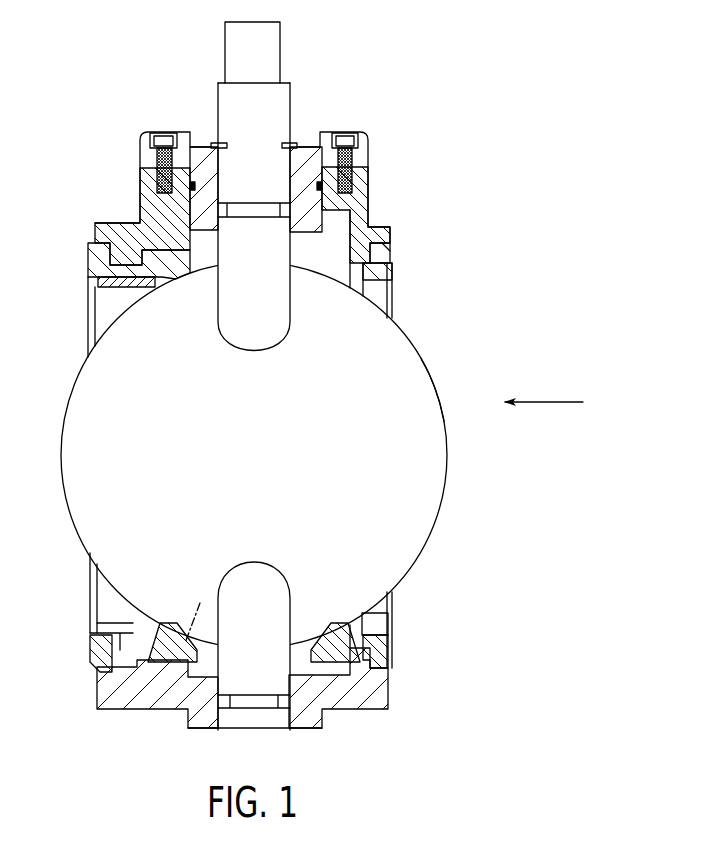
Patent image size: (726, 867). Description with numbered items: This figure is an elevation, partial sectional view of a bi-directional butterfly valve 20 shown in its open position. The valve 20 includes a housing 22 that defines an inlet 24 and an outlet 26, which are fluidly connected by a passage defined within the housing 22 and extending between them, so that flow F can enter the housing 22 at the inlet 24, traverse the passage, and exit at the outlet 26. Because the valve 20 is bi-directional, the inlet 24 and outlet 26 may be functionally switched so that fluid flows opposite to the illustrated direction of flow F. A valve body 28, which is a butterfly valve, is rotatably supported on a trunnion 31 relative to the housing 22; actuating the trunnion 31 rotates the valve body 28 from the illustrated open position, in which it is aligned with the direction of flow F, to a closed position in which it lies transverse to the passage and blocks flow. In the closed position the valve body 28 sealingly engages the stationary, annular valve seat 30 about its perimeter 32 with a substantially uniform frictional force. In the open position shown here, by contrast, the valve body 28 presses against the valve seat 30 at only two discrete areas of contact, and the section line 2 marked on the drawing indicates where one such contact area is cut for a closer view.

The valve 20 is at (422, 118).
The housing 22 is at (356, 212).
The inlet 24 is at (377, 292).
The outlet 26 is at (113, 308).
The valve body 28 is at (412, 528).
The valve seat 30 is at (203, 607).
The trunnion 31 is at (270, 110).
The perimeter 32 is at (430, 370).
The section line 2- 2 is at (200, 603).
The flow F is at (555, 403).